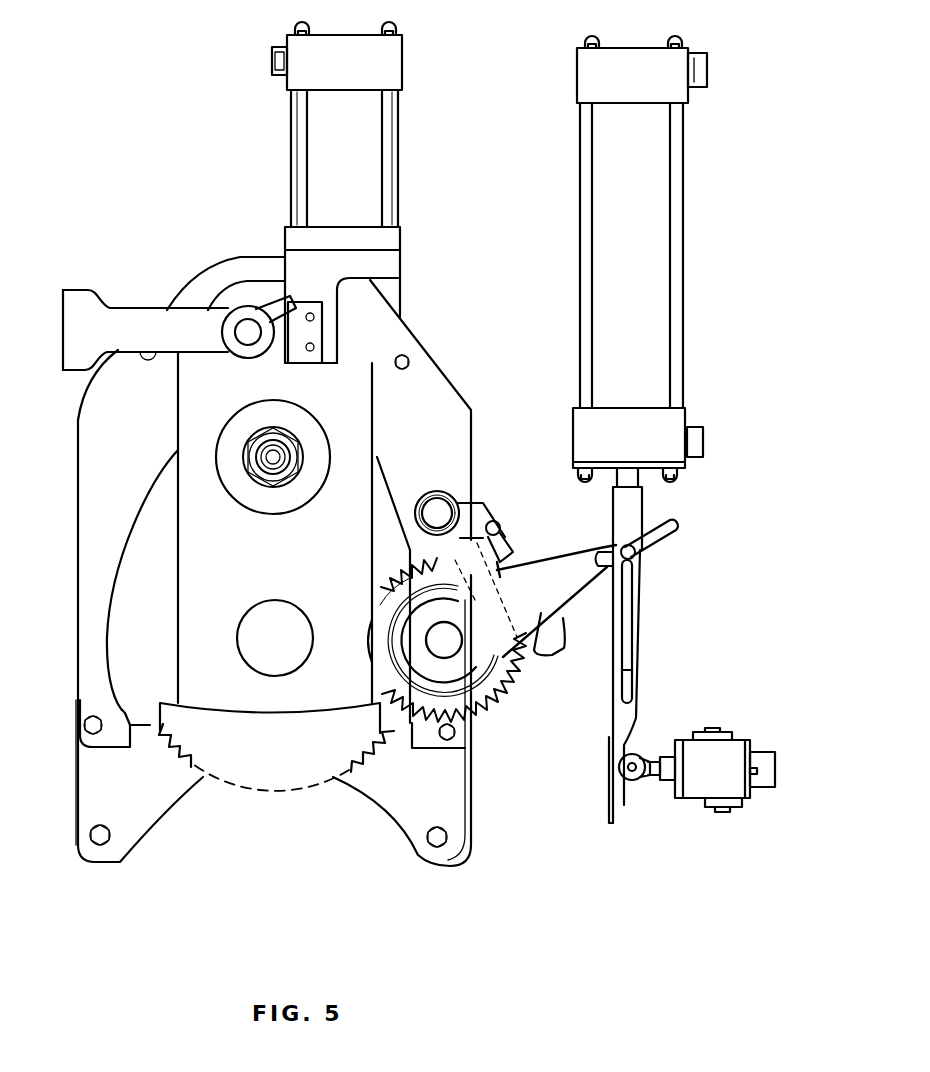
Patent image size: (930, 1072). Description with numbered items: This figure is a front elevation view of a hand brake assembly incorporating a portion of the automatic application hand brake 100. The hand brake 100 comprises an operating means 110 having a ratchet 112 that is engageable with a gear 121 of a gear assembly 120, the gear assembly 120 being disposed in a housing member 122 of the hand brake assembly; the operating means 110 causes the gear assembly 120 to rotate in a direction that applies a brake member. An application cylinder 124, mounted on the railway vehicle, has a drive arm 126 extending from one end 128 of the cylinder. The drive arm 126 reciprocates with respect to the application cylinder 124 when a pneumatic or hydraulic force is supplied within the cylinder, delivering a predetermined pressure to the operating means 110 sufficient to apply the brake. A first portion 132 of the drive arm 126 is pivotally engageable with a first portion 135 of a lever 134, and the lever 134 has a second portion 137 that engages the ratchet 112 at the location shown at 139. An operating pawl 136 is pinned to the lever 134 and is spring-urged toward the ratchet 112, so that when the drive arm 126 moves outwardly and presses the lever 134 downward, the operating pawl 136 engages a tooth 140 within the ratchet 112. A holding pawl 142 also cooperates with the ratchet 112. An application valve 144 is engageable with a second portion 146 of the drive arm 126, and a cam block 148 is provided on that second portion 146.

The automatic application hand brake 100 is at (498, 125).
The operating means 110 is at (698, 520).
The ratchet 112 is at (490, 718).
The gear assembly 120 is at (277, 813).
The gear 121 is at (308, 773).
The housing member 122 is at (148, 693).
The application cylinder 124 is at (570, 285).
The drive arm 126 is at (615, 512).
The end of application cylinder 128 is at (642, 477).
The first portion of drive arm 132 is at (640, 556).
The lever 134 is at (577, 567).
The first portion of lever 135 is at (686, 532).
The operating pawl 136 is at (550, 653).
The second portion of lever 137 is at (453, 672).
The engagement of lever with ratchet 139 is at (445, 641).
The tooth 140 is at (493, 700).
The holding pawl 142 is at (518, 530).
The application valve 144 is at (700, 787).
The second portion of drive arm 146 is at (630, 725).
The cam block 148 is at (620, 787).